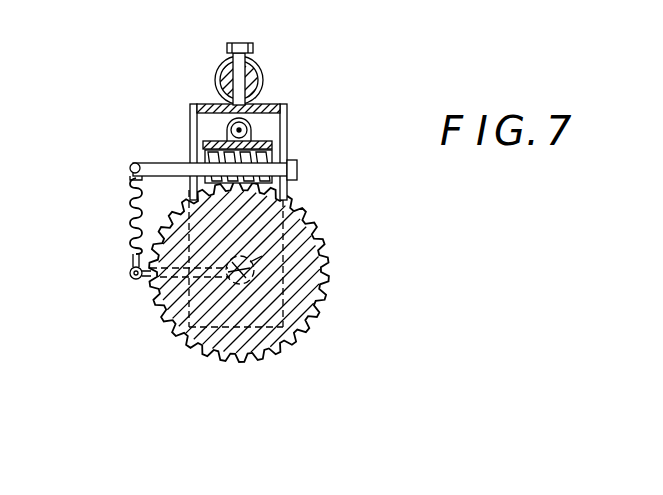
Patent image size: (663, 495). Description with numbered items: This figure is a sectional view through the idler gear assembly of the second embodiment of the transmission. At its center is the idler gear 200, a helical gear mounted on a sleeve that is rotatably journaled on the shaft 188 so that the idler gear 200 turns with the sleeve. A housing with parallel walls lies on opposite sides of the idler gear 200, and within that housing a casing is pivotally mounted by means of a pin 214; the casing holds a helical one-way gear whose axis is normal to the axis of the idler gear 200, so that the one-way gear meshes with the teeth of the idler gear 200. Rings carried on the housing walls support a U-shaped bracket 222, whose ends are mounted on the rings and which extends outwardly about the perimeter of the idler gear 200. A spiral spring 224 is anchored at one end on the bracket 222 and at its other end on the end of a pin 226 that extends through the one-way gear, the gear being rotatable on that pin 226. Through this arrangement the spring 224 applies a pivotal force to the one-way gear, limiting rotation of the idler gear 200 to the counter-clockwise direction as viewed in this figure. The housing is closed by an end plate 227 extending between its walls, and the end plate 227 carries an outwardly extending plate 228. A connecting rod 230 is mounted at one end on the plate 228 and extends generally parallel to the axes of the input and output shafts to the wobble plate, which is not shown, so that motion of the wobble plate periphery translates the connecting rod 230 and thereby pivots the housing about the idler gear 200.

The shaft 188 is at (318, 229).
The idler gear 200 is at (316, 308).
The pin 214 is at (243, 130).
The U-shaped bracket 222 is at (143, 282).
The spiral spring 224 is at (128, 223).
The pin 226 is at (158, 165).
The end plate 227 is at (195, 106).
The plate 228 is at (237, 68).
The connecting rod 230 is at (263, 81).